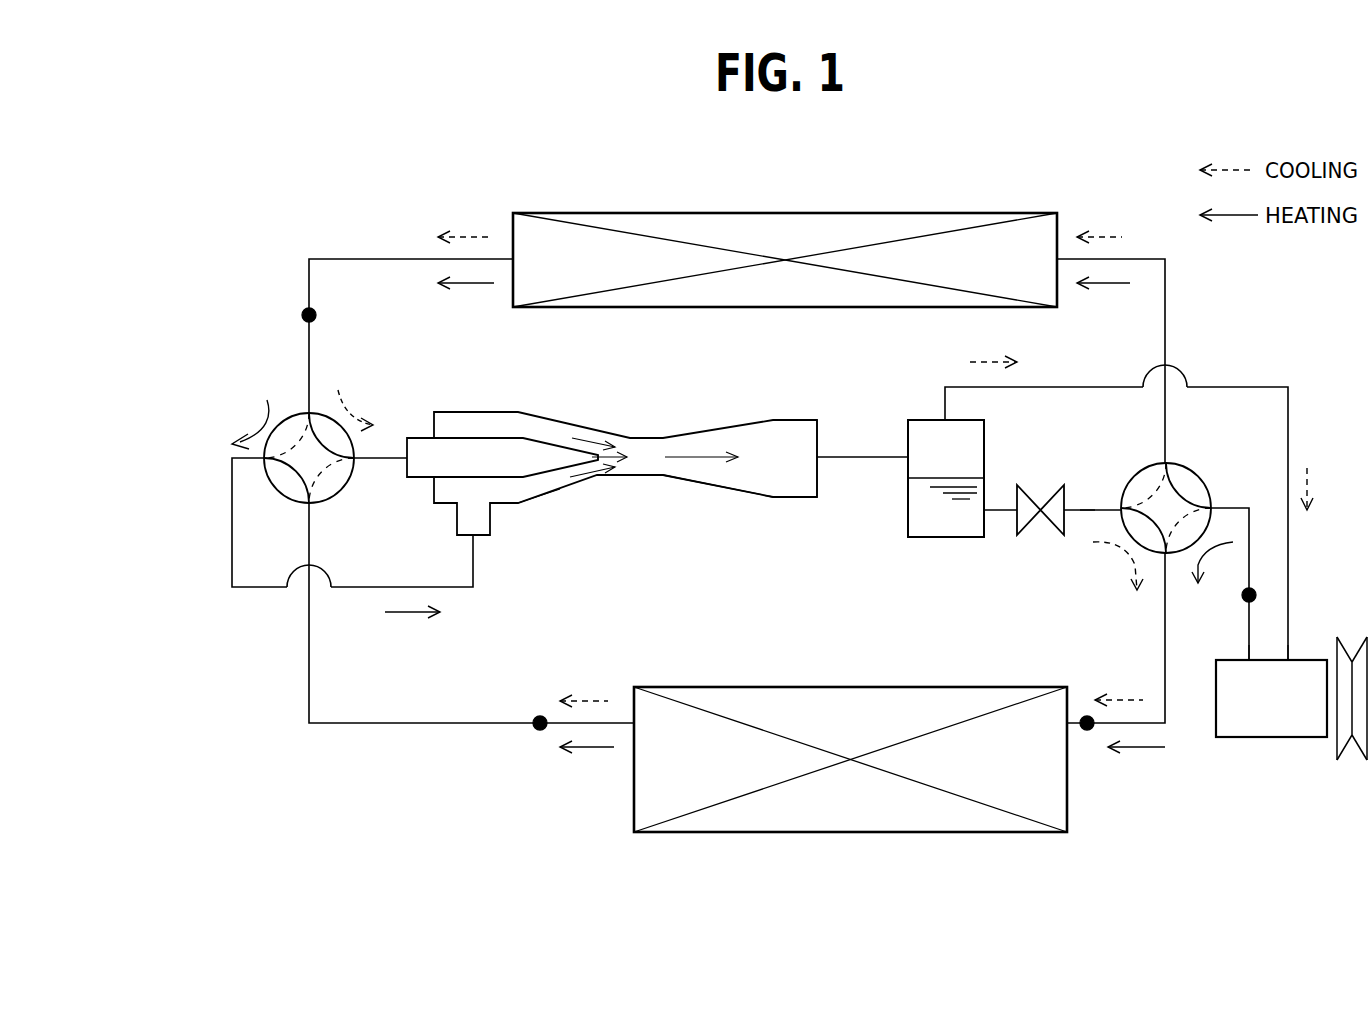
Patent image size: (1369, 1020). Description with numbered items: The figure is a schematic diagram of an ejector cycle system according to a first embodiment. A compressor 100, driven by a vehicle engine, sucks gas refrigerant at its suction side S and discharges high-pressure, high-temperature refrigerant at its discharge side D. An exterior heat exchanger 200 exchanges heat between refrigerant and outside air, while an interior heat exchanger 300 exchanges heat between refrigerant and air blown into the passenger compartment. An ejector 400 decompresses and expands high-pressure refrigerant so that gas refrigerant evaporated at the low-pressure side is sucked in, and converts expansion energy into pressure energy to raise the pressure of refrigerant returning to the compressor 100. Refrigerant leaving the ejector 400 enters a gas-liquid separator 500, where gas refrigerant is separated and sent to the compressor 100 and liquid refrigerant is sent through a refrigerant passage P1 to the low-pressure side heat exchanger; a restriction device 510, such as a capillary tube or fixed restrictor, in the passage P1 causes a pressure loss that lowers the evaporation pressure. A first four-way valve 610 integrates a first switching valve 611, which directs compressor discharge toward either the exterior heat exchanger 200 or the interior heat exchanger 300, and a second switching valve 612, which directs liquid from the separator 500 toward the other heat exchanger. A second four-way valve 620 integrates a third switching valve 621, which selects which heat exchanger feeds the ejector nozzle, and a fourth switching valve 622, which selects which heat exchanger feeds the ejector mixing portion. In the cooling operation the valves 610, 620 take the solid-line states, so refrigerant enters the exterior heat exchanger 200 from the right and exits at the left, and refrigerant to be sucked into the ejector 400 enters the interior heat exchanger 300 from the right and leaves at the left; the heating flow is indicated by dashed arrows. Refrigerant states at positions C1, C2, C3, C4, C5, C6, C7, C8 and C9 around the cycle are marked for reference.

The compressor 100 is at (1284, 712).
The exterior heat exchanger 200 is at (977, 213).
The interior heat exchanger 300 is at (998, 832).
The ejector 400 is at (627, 460).
The gas-liquid separator 500 is at (984, 424).
The restriction device 510 is at (1024, 530).
The first four-way valve 610 is at (1233, 429).
The first switching valve 611 is at (1166, 508).
The second switching valve 612 is at (1193, 462).
The second four-way valve 620 is at (254, 407).
The third switching valve 621 is at (309, 458).
The fourth switching valve 622 is at (282, 415).
The refrigerant state position C1 is at (1243, 597).
The refrigerant state position C2 is at (316, 315).
The refrigerant state position C3 is at (604, 475).
The refrigerant state position C4 is at (642, 460).
The refrigerant state position C5 is at (707, 467).
The refrigerant state position C6 is at (820, 470).
The refrigerant state position C7 is at (1088, 730).
The refrigerant state position C8 is at (539, 730).
The refrigerant state position C9 is at (546, 480).
The refrigerant passage P1 is at (1087, 510).
The compressor discharge D is at (1235, 644).
The compressor suction S is at (1301, 644).